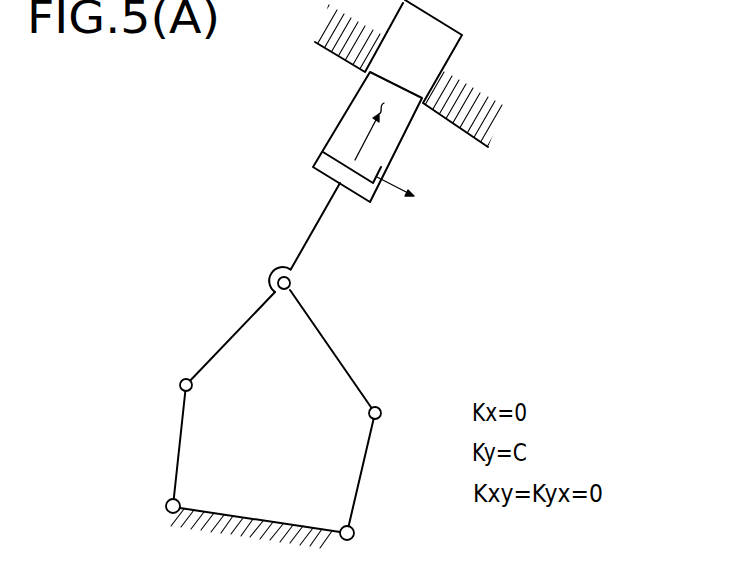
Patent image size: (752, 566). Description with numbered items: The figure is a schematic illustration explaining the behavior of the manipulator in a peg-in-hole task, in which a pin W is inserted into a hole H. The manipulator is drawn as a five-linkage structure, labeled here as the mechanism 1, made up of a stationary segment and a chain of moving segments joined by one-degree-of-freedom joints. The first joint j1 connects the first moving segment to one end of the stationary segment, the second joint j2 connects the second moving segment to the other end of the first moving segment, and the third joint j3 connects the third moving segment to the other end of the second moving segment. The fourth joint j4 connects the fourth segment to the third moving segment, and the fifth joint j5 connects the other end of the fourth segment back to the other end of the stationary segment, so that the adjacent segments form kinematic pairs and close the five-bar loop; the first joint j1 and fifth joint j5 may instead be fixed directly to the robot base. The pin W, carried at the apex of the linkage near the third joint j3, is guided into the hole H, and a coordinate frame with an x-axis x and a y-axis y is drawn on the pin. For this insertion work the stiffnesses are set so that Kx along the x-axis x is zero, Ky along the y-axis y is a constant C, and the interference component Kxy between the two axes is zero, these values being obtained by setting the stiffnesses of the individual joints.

The compliance linkage mechanism 1 is at (194, 296).
The hole H is at (376, 61).
The pin W is at (392, 137).
The first joint j1 is at (168, 504).
The second joint j2 is at (192, 385).
The third joint j3 is at (286, 290).
The fourth joint j4 is at (381, 413).
The fifth joint j5 is at (355, 535).
The x-axis x is at (403, 196).
The y-axis y is at (374, 118).